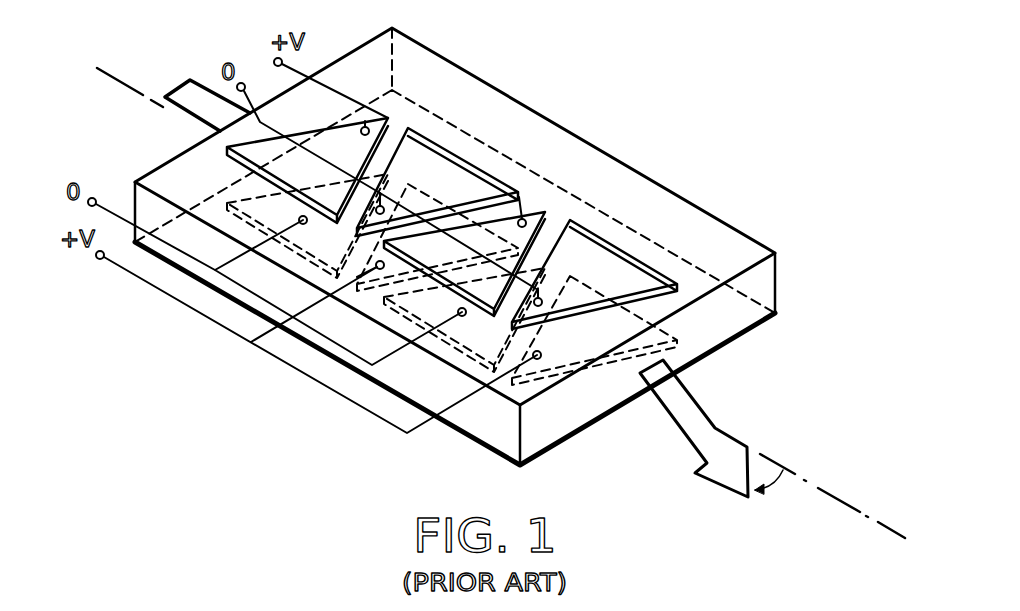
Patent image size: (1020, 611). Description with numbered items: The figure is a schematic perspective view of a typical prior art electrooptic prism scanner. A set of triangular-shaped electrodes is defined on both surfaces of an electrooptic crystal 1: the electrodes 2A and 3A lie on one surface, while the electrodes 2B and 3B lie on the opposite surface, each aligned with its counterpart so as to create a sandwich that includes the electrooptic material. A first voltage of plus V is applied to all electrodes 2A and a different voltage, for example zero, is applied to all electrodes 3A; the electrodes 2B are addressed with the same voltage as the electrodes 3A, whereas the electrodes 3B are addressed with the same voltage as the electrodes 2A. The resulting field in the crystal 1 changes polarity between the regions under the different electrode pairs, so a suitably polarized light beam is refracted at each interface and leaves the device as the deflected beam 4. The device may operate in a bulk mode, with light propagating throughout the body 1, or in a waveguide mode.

The electrooptic crystal 1 is at (779, 289).
The triangular-shaped electrode 2A is at (388, 106).
The triangular-shaped electrode 2B is at (288, 243).
The triangular-shaped electrode 3A is at (462, 153).
The triangular-shaped electrode 3B is at (361, 288).
The deflected beam 4 is at (695, 476).